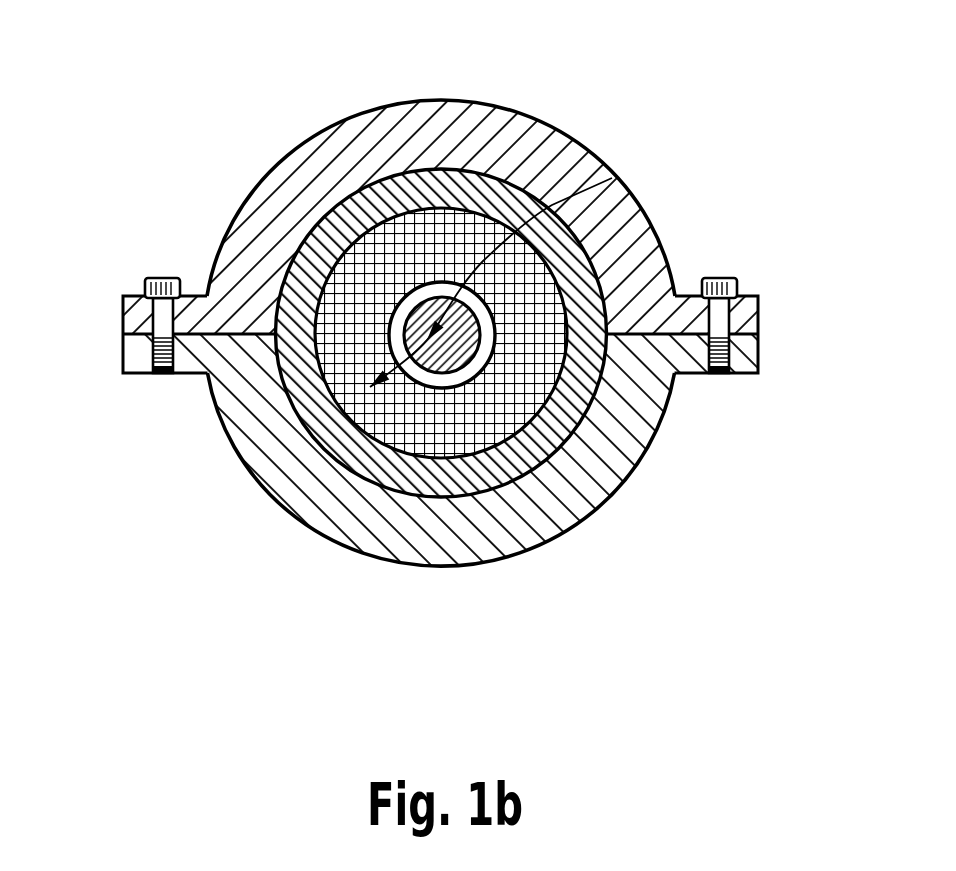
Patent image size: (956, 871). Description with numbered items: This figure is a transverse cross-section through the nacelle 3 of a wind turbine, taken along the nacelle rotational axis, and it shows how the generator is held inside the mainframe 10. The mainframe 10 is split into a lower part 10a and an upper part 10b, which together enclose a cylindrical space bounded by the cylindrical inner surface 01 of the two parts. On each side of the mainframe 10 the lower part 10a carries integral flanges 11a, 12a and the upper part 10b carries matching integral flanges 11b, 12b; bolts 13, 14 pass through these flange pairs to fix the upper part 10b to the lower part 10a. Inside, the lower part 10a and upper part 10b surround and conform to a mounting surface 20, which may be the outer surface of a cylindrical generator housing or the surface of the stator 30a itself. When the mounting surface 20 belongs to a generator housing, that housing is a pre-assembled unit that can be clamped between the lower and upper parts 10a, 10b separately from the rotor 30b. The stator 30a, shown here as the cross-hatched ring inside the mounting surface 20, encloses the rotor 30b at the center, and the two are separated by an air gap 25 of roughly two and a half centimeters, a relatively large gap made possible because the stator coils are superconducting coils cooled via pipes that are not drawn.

The nacelle 3 is at (478, 435).
The mainframe 10 is at (478, 435).
The lower part 10a is at (478, 435).
The upper part 10b is at (478, 435).
The flange 11a is at (135, 358).
The flange 11b is at (138, 317).
The flange 12a is at (755, 357).
The flange 12b is at (752, 320).
The bolt 13 is at (163, 278).
The bolt 14 is at (720, 278).
The mounting surface 20 is at (470, 473).
The air gap 25 is at (412, 385).
The stator 30a is at (352, 345).
The rotor 30b is at (612, 178).
The cylindrical inner surface 01 is at (323, 450).